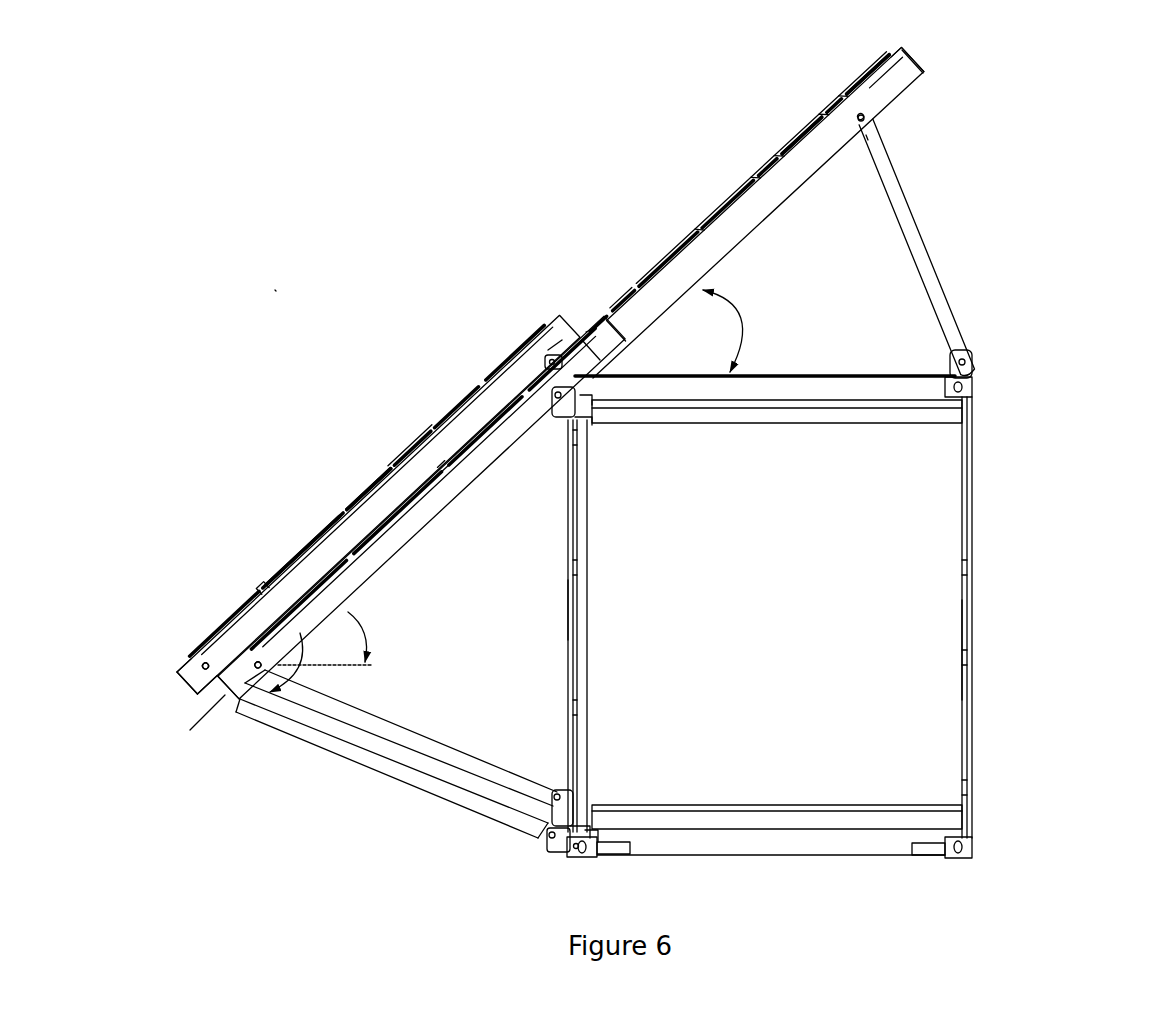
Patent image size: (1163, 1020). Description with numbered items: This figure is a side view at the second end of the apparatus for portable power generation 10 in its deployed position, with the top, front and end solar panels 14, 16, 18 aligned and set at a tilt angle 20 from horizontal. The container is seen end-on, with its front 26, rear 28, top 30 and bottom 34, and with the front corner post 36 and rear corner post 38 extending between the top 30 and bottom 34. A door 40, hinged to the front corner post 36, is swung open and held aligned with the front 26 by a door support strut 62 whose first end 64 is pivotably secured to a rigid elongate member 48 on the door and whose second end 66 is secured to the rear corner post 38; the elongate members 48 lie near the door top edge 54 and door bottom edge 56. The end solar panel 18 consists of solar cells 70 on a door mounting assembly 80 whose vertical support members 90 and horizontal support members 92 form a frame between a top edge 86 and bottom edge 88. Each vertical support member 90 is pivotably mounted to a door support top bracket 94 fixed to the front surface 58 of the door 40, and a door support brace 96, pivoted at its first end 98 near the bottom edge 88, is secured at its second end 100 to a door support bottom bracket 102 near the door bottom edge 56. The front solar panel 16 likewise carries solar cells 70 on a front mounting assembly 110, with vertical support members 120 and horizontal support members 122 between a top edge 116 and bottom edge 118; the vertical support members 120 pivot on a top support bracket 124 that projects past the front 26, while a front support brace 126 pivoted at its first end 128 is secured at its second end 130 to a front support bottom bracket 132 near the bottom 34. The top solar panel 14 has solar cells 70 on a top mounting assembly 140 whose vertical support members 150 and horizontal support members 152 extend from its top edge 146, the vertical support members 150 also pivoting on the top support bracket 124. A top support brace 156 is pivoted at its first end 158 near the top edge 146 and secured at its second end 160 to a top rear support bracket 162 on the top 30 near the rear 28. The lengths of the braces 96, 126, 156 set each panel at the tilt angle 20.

The apparatus for portable power generation 10 is at (273, 287).
The top solar panel 14 is at (710, 228).
The front solar panel 16 is at (328, 535).
The end solar panel 18 is at (420, 530).
The tilt angle 20 is at (745, 322).
The front 26 is at (558, 545).
The rear 28 is at (980, 507).
The top 30 is at (862, 366).
The bottom 34 is at (822, 862).
The front corner post 36 is at (556, 786).
The rear corner post 38 is at (975, 713).
The door 40 is at (572, 605).
The rigid elongate member 48 is at (612, 328).
The door top edge 54 is at (584, 335).
The door bottom edge 56 is at (576, 858).
The front surface 58 is at (420, 748).
The door support strut 62 is at (905, 405).
The first end 64 is at (560, 840).
The second end 66 is at (977, 410).
The solar cells 70 is at (882, 85).
The door mounting assembly 80 is at (290, 620).
The top edge 86 is at (640, 298).
The bottom edge 88 is at (225, 700).
The vertical support member 90 is at (300, 718).
The horizontal support member 92 is at (392, 515).
The door support top bracket 94 is at (546, 360).
The door support brace 96 is at (350, 738).
The first end 98 is at (268, 683).
The second end 100 is at (548, 837).
The door support bottom bracket 102 is at (556, 800).
The front mounting assembly 110 is at (215, 650).
The top edge 116 is at (600, 305).
The bottom edge 118 is at (176, 682).
The vertical support member 120 is at (205, 660).
The horizontal support member 122 is at (250, 620).
The top support bracket 124 is at (556, 345).
The front support brace 126 is at (392, 768).
The first end 128 is at (190, 694).
The second end 130 is at (556, 865).
The front support bottom bracket 132 is at (548, 853).
The top mounting assembly 140 is at (905, 80).
The top edge 146 is at (922, 58).
The vertical support member 150 is at (890, 88).
The horizontal support member 152 is at (825, 115).
The top support brace 156 is at (915, 207).
The first end 158 is at (880, 123).
The second end 160 is at (987, 372).
The top rear support bracket 162 is at (975, 387).